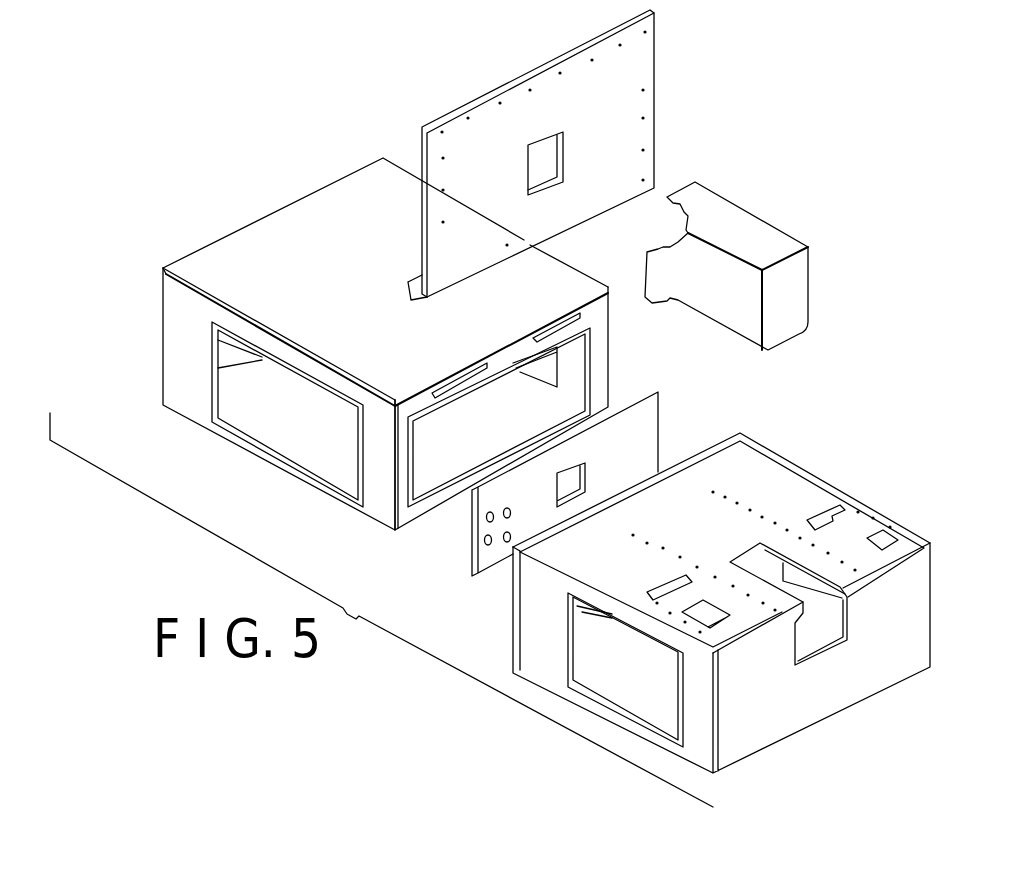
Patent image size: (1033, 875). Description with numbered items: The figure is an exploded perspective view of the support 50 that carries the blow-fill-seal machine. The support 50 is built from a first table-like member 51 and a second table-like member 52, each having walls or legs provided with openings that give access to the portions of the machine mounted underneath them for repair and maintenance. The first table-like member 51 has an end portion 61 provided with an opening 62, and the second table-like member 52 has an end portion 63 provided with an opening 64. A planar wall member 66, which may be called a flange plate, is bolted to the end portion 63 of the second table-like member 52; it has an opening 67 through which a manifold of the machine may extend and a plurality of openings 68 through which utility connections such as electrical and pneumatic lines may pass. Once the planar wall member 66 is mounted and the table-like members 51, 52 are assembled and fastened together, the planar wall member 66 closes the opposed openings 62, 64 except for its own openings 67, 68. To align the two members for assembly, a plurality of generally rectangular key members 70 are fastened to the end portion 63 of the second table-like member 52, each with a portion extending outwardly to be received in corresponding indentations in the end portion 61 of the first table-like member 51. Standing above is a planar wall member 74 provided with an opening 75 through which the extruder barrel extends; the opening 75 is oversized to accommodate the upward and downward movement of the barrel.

The support 50 is at (726, 159).
The first table-like member 51 is at (813, 478).
The second table-like member 52 is at (270, 222).
The end portion 61 is at (498, 608).
The opening 62 is at (588, 610).
The end portion 63 is at (377, 505).
The opening 64 is at (432, 450).
The planar wall member 66 is at (660, 428).
The opening 67 is at (583, 470).
The openings 68 is at (477, 554).
The key member 70 is at (572, 327).
The planar wall member 74 is at (612, 84).
The opening 75 is at (542, 153).